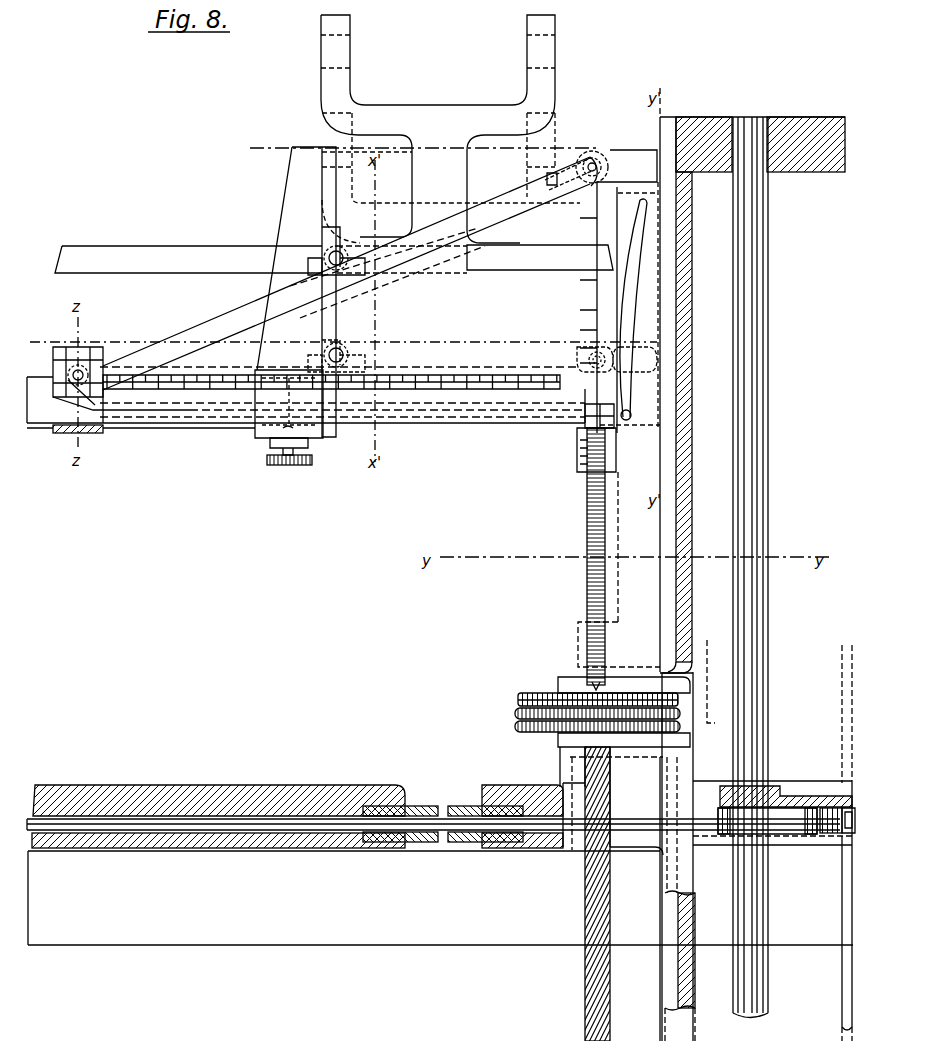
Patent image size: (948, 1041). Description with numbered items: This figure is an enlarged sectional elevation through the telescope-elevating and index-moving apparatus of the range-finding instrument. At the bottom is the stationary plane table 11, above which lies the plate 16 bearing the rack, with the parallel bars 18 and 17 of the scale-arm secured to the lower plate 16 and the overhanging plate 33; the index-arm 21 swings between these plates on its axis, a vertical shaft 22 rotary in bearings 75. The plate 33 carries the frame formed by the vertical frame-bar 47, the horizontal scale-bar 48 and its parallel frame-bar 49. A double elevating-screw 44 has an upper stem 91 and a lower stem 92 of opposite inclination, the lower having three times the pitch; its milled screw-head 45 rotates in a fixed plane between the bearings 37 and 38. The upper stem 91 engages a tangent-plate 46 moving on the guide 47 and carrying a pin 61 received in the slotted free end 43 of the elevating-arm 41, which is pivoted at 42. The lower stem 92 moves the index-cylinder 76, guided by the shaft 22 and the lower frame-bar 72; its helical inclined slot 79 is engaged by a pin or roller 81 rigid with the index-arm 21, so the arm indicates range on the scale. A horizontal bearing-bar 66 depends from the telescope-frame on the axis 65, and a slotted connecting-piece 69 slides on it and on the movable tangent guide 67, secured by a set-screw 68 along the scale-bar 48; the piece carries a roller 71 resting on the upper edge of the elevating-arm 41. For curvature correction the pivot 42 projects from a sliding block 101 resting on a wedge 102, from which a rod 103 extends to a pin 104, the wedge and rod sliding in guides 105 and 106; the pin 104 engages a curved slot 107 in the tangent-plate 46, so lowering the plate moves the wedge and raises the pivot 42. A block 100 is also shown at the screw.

The stationary plane table 11 is at (440, 898).
The plate 16 is at (265, 845).
The parallel bar 17 is at (420, 843).
The scale-arm 18 is at (425, 805).
The index-arm 21 is at (180, 810).
The vertical shaft 22 is at (750, 567).
The plate 33 is at (298, 785).
The bearing 37 is at (558, 684).
The bearing 38 is at (558, 742).
The elevating-arm 41 is at (350, 273).
The pivot 42 is at (62, 370).
The free end of the elevating-arm 43 is at (600, 160).
The elevating-screw 44 is at (572, 903).
The milled screw-head 45 is at (518, 703).
The tangent-plate 46 is at (609, 291).
The vertical frame-bar 47 is at (642, 606).
The horizontal scale-bar 48 is at (388, 403).
The frame-bar 49 is at (344, 390).
The pin 61 is at (592, 158).
The axis 65 is at (321, 50).
The horizontal bearing-bar 66 is at (334, 259).
The movable tangent guide 67 is at (350, 310).
The set-screw 68 is at (270, 465).
The slotted connecting-piece 69 is at (322, 232).
The roller 71 is at (342, 255).
The lower frame-bar 72 is at (668, 962).
The bearing 75 is at (767, 118).
The index-cylinder 76 is at (790, 797).
The inclined slot 79 is at (850, 945).
The pin or roller 81 is at (838, 832).
The upper screw-threaded stem 91 is at (588, 578).
The lower screw-threaded stem 92 is at (588, 955).
The nut block 100 is at (599, 416).
The sliding block 101 is at (80, 370).
The wedge 102 is at (30, 413).
The rod 103 is at (478, 440).
The pin 104 is at (632, 412).
The guide 105 is at (85, 433).
The guide 106 is at (578, 430).
The curved slot 107 is at (630, 292).